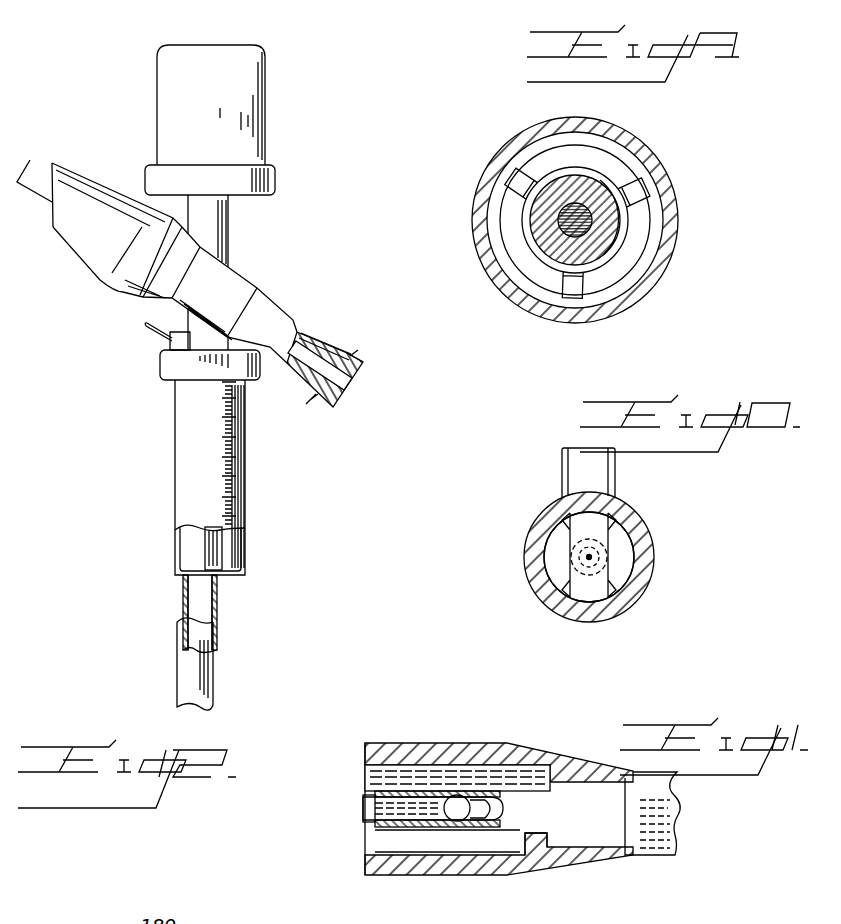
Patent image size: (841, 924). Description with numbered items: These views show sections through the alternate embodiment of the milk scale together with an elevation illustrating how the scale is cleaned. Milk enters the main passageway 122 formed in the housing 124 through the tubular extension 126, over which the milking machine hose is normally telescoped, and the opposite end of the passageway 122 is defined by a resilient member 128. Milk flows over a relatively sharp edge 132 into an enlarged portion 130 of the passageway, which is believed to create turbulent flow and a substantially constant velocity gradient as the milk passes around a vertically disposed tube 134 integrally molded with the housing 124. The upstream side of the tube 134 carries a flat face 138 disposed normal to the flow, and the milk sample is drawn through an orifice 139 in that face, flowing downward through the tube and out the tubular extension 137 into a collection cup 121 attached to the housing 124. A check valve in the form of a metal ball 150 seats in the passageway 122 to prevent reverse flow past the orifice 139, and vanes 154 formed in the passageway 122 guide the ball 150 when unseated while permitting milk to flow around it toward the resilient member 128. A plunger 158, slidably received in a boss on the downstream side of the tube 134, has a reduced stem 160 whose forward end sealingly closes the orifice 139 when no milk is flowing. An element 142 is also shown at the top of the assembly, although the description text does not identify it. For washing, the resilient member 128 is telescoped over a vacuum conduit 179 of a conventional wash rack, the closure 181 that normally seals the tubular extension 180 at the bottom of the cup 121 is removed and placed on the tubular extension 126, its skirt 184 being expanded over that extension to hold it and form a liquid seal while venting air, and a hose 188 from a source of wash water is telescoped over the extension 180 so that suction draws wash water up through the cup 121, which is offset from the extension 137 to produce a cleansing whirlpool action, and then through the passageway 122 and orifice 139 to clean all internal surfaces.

In FIG. 12, the collection cup 121 is at (173, 478).
In FIG. 11, the main passageway 122 is at (590, 785).
In FIG. 10, the housing 124 is at (615, 483).
In FIG. 12, the tubular extension 126 is at (296, 334).
In FIG. 11, the tubular extension 126 is at (652, 857).
In FIG. 12, the resilient member 128 is at (88, 263).
In FIG. 9, the resilient member 128 is at (650, 152).
In FIG. 10, the enlarged portion 130 is at (627, 556).
In FIG. 11, the enlarged portion 130 is at (455, 765).
In FIG. 11, the sharp edge 132 is at (537, 833).
In FIG. 10, the tube 134 is at (570, 548).
In FIG. 12, the tubular extension 137 is at (200, 552).
In FIG. 10, the flat face 138 is at (595, 585).
In FIG. 11, the flat face 138 is at (523, 835).
In FIG. 10, the orifice 139 is at (593, 560).
In FIG. 11, the orifice 139 is at (495, 810).
In FIG. 12, the cap 142 is at (266, 110).
In FIG. 9, the ball 150 is at (627, 243).
In FIG. 9, the vanes 154 is at (667, 193).
In FIG. 11, the plunger 158 is at (363, 810).
In FIG. 11, the stem 160 is at (423, 828).
In FIG. 12, the vacuum conduit 179 is at (40, 160).
In FIG. 12, the tubular extension 180 is at (215, 627).
In FIG. 12, the closure 181 is at (305, 399).
In FIG. 12, the skirt 184 is at (363, 362).
In FIG. 12, the hose 188 is at (175, 680).